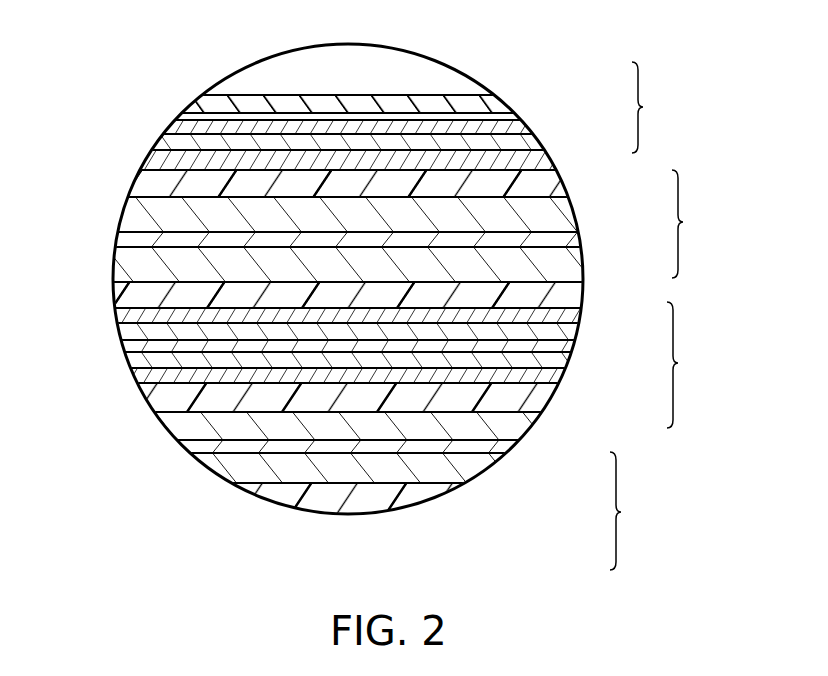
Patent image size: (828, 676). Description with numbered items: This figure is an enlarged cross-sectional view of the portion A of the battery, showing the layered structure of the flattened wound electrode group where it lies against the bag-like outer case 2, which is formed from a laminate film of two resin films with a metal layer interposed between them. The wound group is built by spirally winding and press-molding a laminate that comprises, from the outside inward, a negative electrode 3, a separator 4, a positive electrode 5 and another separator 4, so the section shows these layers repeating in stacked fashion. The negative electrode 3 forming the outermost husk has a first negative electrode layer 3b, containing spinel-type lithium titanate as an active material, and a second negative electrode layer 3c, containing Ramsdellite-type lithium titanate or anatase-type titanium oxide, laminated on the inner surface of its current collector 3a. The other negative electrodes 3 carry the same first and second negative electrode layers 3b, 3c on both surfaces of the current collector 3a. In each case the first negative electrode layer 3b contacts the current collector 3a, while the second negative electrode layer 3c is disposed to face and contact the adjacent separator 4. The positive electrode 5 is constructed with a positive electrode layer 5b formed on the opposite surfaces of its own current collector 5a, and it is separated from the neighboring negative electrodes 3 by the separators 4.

The portion A is at (239, 79).
The outer case 2 is at (500, 102).
The negative electrode 3 is at (669, 245).
The current collector 3a is at (517, 130).
The first negative electrode layer 3b is at (530, 140).
The second negative electrode layer 3c is at (538, 158).
The separator 4 is at (130, 182).
The positive electrode 5 is at (657, 370).
The current collector 5a is at (560, 237).
The positive electrode layer 5b is at (555, 205).